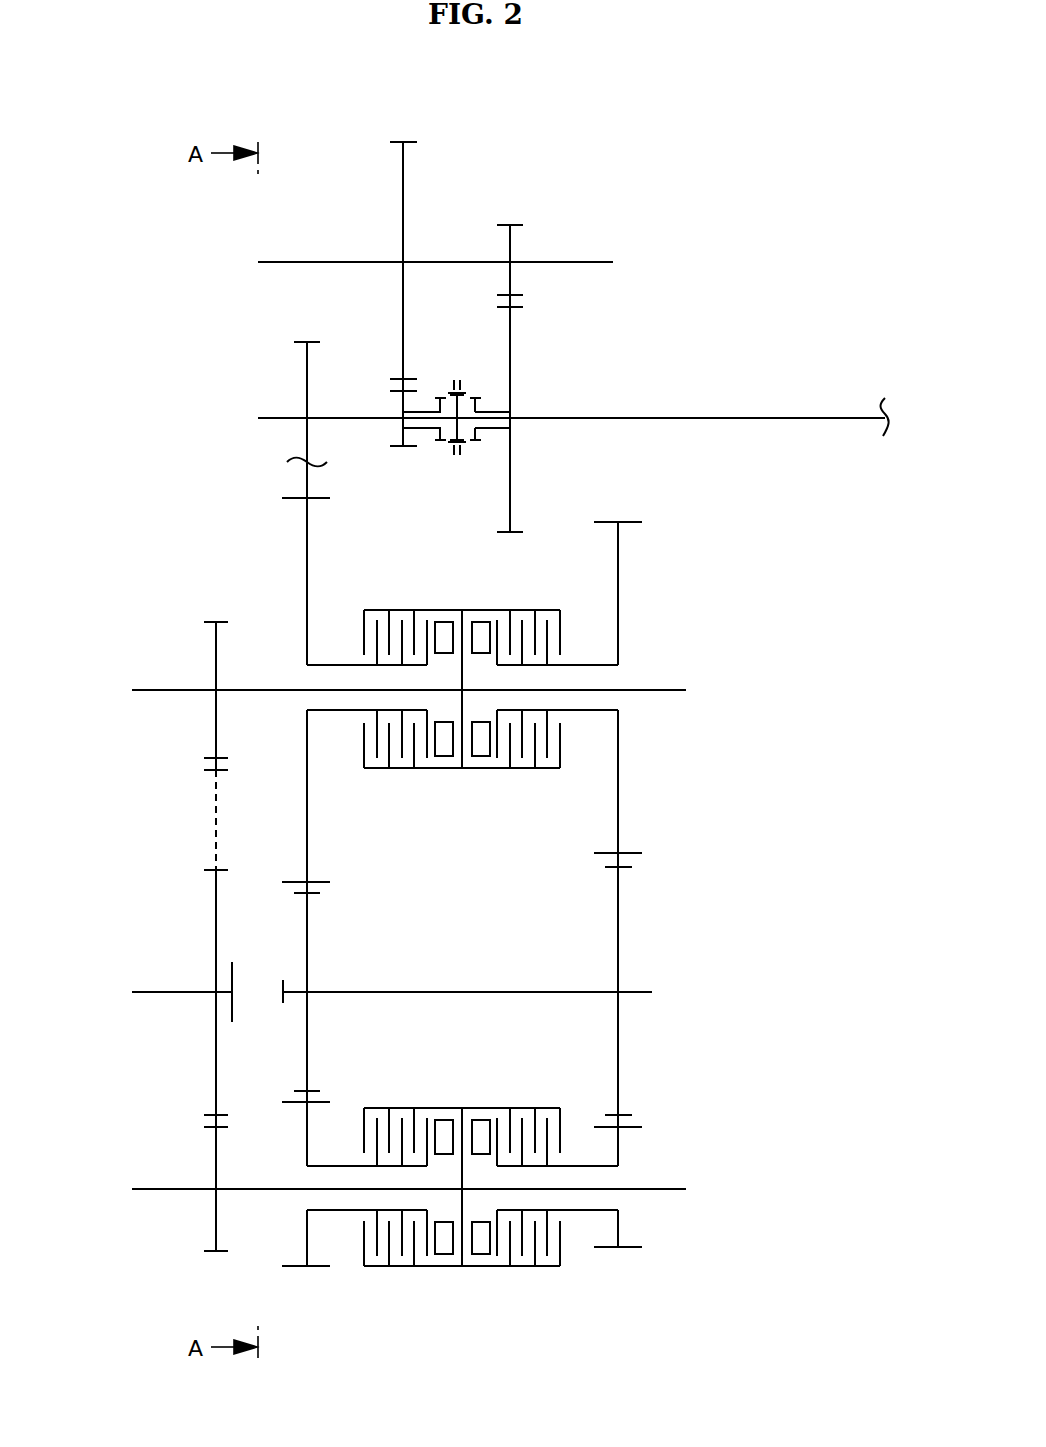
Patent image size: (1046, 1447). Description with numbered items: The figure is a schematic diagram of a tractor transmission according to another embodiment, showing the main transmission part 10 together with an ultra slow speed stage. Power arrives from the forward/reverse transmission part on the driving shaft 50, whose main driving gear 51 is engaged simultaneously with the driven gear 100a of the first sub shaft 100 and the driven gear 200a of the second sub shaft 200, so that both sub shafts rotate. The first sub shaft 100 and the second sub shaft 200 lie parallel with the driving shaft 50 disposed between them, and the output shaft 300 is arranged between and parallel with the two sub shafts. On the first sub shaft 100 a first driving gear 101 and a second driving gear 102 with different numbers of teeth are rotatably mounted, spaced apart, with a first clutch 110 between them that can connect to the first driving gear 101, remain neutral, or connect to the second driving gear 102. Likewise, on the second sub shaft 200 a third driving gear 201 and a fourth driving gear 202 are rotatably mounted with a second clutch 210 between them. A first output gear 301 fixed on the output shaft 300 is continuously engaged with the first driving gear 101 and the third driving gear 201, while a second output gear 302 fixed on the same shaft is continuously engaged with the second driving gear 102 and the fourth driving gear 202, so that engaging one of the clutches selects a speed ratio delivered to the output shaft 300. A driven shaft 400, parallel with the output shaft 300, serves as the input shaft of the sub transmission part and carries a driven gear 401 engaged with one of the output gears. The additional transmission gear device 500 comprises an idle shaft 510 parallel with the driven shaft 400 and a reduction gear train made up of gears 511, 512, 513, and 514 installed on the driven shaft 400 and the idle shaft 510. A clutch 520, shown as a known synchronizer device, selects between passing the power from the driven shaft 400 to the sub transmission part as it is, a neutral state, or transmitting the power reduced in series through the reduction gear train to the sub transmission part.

The main transmission part 10 is at (129, 527).
The driving shaft 50 is at (160, 992).
The main driving gear 51 is at (216, 1088).
The first sub shaft 100 is at (161, 1204).
The driven gear 100a is at (209, 1254).
The first driving gear 101 is at (628, 1248).
The second driving gear 102 is at (295, 1266).
The first clutch 110 is at (487, 1266).
The second sub shaft 200 is at (160, 690).
The driven gear 200a is at (212, 620).
The third driving gear 201 is at (618, 592).
The fourth driving gear 202 is at (307, 556).
The second clutch 210 is at (440, 610).
The output shaft 300 is at (469, 992).
The first output gear 301 is at (618, 1052).
The second output gear 302 is at (307, 943).
The driven shaft 400 is at (724, 418).
The driven gear 401 is at (306, 384).
The additional transmission gear device 500 is at (258, 256).
The idle shaft 510 is at (578, 262).
The reduction gear train gear 511 is at (403, 403).
The reduction gear train gear 512 is at (403, 182).
The reduction gear train gear 513 is at (510, 225).
The reduction gear train gear 514 is at (510, 362).
The clutch 520 is at (447, 466).